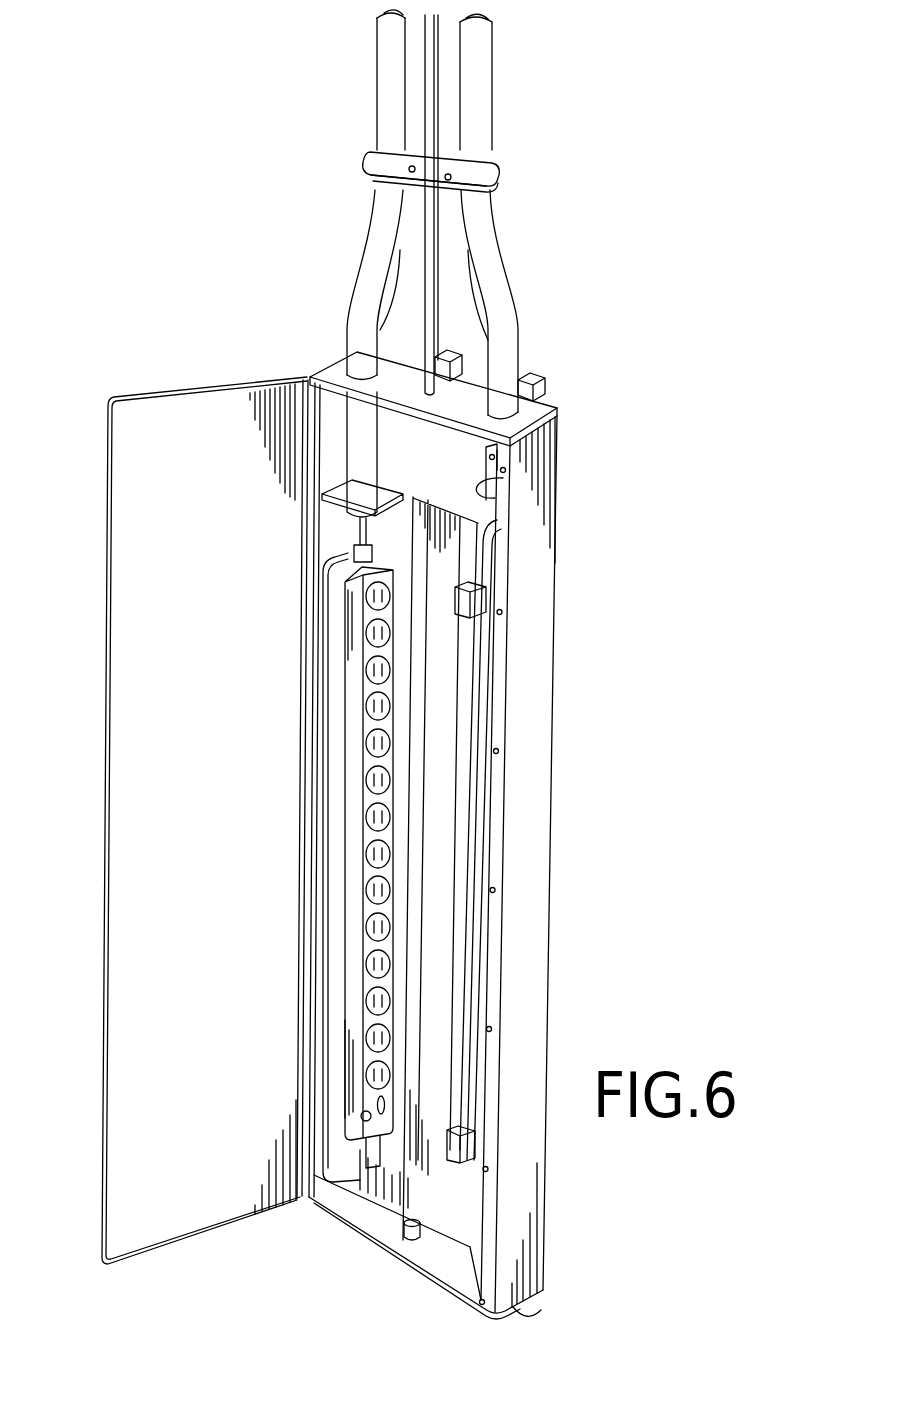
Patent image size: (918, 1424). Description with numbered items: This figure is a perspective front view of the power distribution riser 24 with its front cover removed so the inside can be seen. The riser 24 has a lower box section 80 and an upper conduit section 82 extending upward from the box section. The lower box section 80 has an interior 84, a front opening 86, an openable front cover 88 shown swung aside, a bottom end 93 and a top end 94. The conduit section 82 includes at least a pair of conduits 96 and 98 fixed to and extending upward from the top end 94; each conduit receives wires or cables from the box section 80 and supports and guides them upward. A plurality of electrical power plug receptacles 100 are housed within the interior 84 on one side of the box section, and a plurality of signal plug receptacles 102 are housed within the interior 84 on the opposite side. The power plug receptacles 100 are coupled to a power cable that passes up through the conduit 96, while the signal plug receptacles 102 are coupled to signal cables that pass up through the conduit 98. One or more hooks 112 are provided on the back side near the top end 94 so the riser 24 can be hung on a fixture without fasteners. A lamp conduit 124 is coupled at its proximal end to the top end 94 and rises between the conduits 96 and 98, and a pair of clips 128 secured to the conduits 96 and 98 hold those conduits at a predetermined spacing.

The power distribution riser 24 is at (580, 644).
The lower box section 80 is at (530, 858).
The upper conduit section 82 is at (656, 30).
The interior 84 is at (414, 452).
The front opening 86 is at (486, 470).
The openable front cover 88 is at (150, 520).
The bottom end 93 is at (516, 1308).
The top end 94 is at (537, 405).
The conduit 96 is at (382, 76).
The conduit 98 is at (470, 107).
The electrical power plug receptacles 100 is at (368, 782).
The signal plug receptacles 102 is at (462, 673).
The hooks 112 is at (538, 380).
The lamp conduit 124 is at (427, 233).
The clips 128 is at (380, 170).